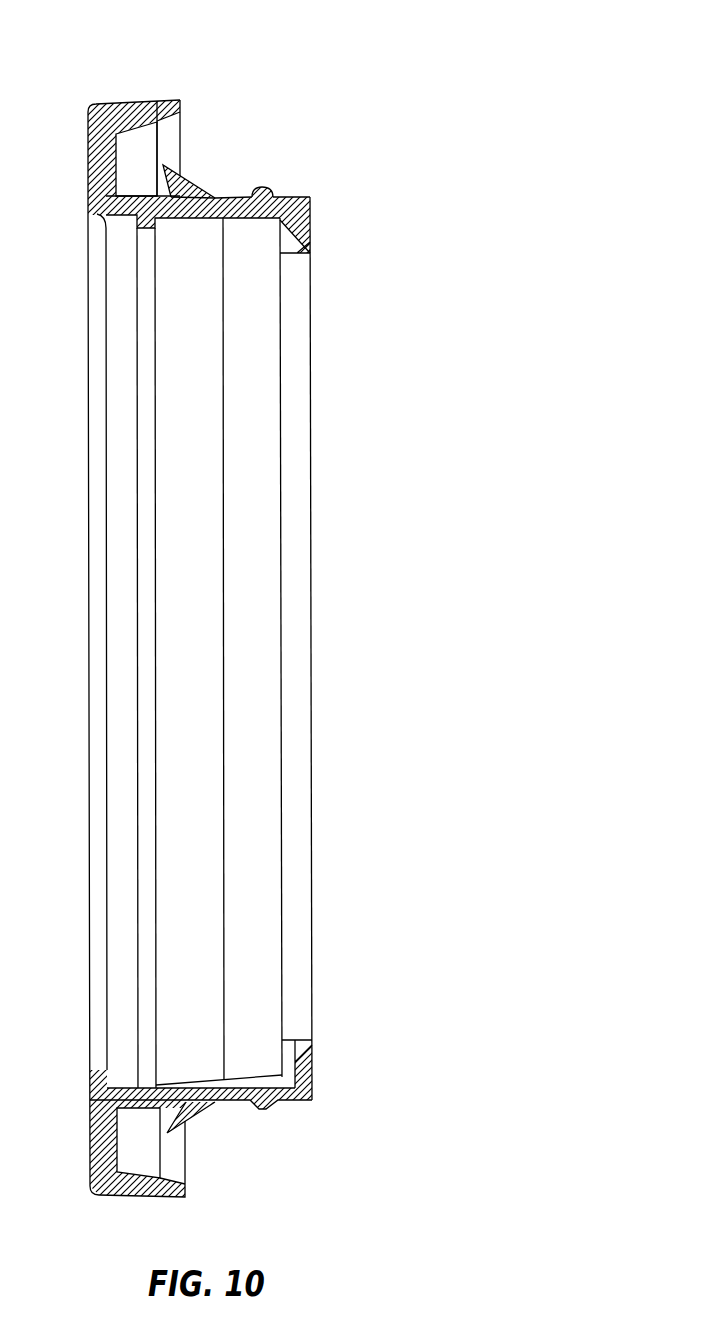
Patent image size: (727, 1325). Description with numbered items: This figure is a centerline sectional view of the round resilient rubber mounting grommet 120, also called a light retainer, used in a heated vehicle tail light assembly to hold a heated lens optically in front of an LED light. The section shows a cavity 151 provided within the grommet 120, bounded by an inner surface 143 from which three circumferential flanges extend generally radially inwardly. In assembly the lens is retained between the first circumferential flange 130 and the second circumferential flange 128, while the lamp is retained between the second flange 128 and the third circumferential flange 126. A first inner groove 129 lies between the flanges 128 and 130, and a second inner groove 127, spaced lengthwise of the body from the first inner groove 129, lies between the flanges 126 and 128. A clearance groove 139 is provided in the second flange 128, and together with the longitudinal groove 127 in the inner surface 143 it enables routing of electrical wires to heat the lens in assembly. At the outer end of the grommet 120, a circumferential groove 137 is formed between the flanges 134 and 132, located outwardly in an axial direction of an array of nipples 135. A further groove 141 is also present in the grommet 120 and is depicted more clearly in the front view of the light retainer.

The mounting grommet 120 is at (112, 86).
The third circumferential flange 126 is at (309, 232).
The second inner groove 127 is at (198, 1076).
The second circumferential flange 128 is at (176, 220).
The first inner groove 129 is at (123, 1064).
The first circumferential flange 130 is at (102, 214).
The flange 132 is at (190, 180).
The flange 134 is at (157, 100).
The array of nipples 135 is at (268, 190).
The circumferential groove 137 is at (197, 127).
The clearance groove 139 is at (147, 1075).
The groove 141 is at (290, 1063).
The inner surface 143 is at (249, 232).
The cavity 151 is at (192, 418).